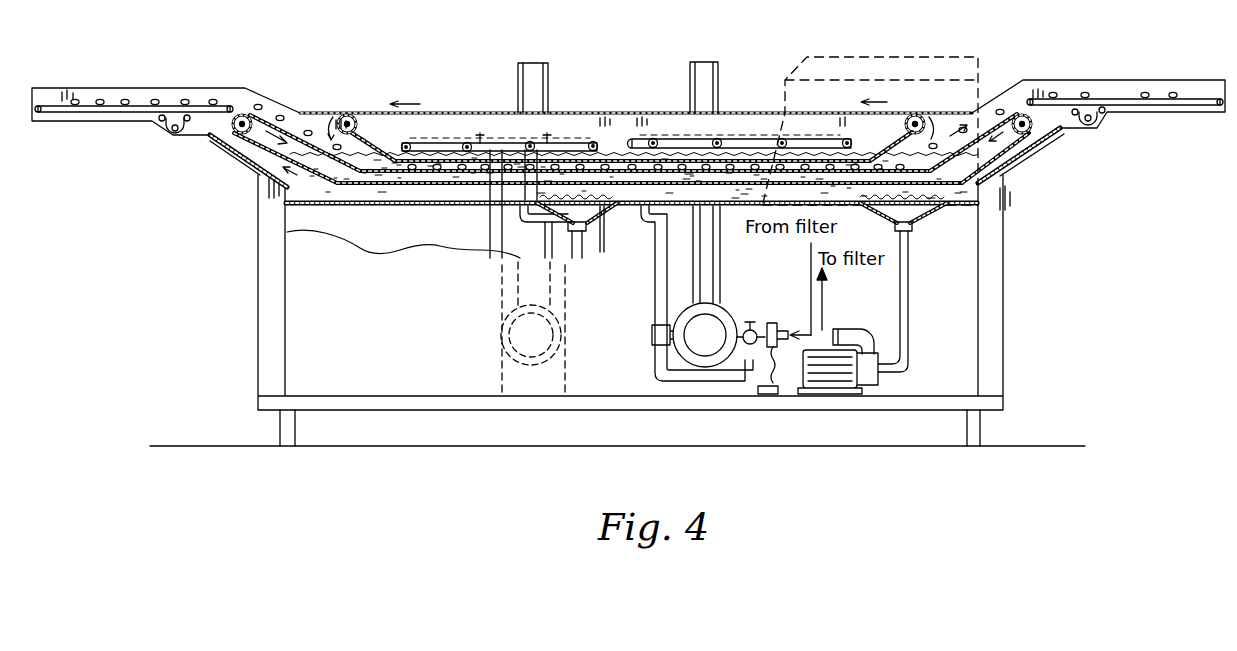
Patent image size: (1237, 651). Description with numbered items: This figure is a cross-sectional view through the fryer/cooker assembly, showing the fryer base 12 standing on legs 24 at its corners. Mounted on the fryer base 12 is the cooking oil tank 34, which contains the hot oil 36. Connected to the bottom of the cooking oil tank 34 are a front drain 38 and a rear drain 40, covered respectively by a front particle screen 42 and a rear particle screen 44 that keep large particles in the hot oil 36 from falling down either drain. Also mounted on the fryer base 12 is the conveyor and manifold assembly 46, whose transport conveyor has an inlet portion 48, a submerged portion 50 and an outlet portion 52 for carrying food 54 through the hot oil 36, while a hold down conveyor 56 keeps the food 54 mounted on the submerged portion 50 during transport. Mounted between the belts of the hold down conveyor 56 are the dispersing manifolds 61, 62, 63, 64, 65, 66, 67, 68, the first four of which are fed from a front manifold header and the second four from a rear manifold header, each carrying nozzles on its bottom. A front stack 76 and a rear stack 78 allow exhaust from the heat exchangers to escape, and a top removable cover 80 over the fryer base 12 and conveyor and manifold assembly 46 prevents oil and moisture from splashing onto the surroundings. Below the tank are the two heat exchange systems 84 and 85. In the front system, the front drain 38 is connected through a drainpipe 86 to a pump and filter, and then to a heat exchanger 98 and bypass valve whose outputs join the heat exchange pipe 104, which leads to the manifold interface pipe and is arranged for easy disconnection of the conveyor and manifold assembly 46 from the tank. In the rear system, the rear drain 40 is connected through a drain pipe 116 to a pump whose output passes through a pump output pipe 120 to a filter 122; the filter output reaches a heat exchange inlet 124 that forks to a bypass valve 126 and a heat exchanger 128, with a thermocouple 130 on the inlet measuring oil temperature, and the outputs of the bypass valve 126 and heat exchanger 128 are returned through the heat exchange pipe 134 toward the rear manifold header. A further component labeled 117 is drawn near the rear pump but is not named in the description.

The fryer base 12 is at (1003, 297).
The legs 24 is at (297, 432).
The cooking oil tank 34 is at (313, 207).
The hot oil 36 is at (1014, 163).
The front drain 38 is at (602, 254).
The rear drain 40 is at (921, 223).
The front particle screen 42 is at (607, 227).
The rear particle screen 44 is at (913, 188).
The conveyor and manifold assembly 46 is at (1049, 78).
The inlet portion 48 is at (50, 106).
The submerged portion 50 is at (240, 129).
The outlet portion 52 is at (1193, 100).
The food 54 is at (268, 118).
The hold down conveyor 56 is at (344, 114).
The dispersing manifold 61 is at (409, 143).
The dispersing manifold 62 is at (467, 142).
The dispersing manifold 63 is at (528, 141).
The dispersing manifold 64 is at (592, 141).
The dispersing manifold 65 is at (655, 138).
The dispersing manifold 66 is at (718, 138).
The dispersing manifold 67 is at (784, 138).
The dispersing manifold 68 is at (847, 138).
The front stack 76 is at (550, 73).
The rear stack 78 is at (720, 73).
The top removable cover 80 is at (860, 56).
The heat exchange system 84 is at (507, 290).
The heat exchange system 85 is at (761, 287).
The drainpipe 86 is at (572, 250).
The heat exchanger 98 is at (562, 334).
The heat exchange pipe 104 is at (490, 212).
The drain pipe 116 is at (909, 323).
The pump motor 117 is at (832, 389).
The pump output pipe 120 is at (845, 329).
The filter 122 is at (847, 299).
The heat exchange inlet 124 is at (773, 323).
The bypass valve 126 is at (750, 322).
The heat exchanger 128 is at (701, 317).
The thermocouple 130 is at (776, 358).
The heat exchange pipe 134 is at (527, 219).